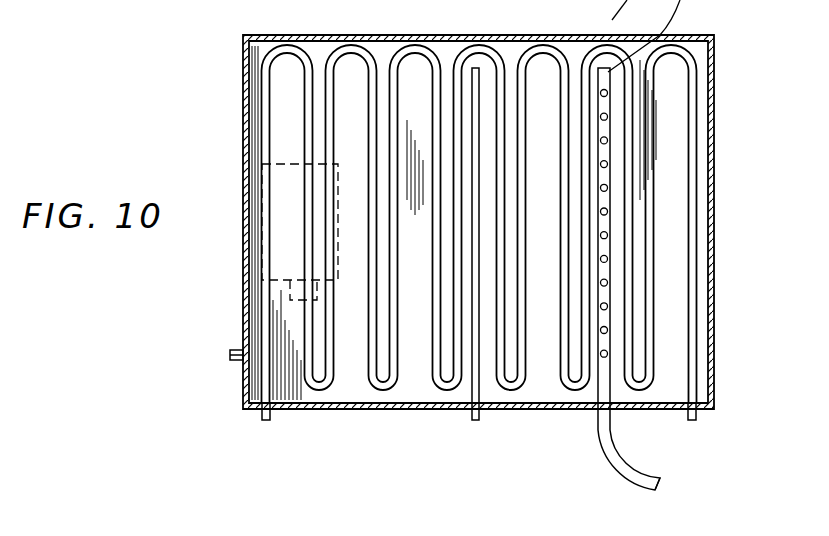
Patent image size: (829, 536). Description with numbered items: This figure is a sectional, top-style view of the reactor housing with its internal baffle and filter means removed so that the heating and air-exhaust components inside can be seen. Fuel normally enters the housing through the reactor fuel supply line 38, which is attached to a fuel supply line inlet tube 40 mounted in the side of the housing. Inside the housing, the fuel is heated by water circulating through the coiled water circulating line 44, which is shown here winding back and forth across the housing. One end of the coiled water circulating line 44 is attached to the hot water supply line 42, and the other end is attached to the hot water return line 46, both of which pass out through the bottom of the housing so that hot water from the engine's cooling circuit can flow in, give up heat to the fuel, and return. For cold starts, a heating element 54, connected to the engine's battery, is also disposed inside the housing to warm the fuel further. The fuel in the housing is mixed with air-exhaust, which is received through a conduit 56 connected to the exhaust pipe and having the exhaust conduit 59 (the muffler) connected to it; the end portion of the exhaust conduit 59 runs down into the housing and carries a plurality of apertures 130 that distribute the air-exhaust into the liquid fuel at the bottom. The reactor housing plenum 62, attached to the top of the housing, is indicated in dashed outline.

The reactor fuel supply line 38 is at (150, 530).
The fuel supply line inlet tube 40 is at (232, 357).
The hot water supply line 42 is at (83, 0).
The coiled water circulating line 44 is at (690, 206).
The hot water return line 46 is at (695, 420).
The heating element 54 is at (247, 0).
The conduit 56 is at (670, 462).
The exhaust conduit 59 is at (488, 4).
The reactor housing plenum 62 is at (297, 212).
The apertures 130 is at (607, 165).